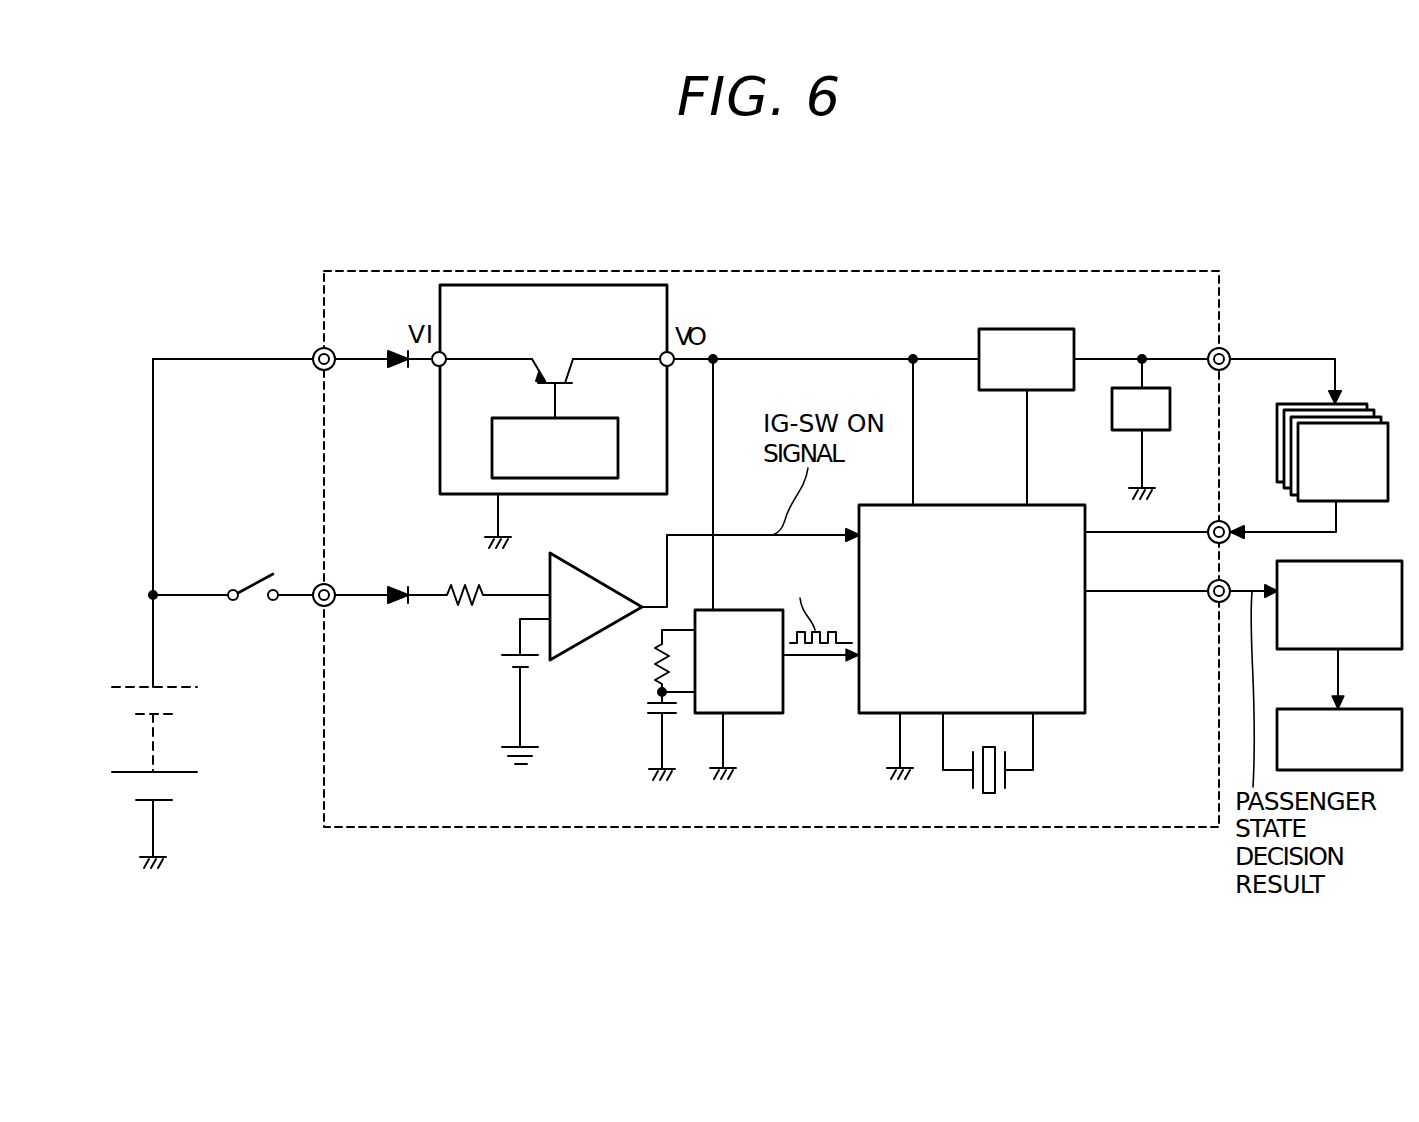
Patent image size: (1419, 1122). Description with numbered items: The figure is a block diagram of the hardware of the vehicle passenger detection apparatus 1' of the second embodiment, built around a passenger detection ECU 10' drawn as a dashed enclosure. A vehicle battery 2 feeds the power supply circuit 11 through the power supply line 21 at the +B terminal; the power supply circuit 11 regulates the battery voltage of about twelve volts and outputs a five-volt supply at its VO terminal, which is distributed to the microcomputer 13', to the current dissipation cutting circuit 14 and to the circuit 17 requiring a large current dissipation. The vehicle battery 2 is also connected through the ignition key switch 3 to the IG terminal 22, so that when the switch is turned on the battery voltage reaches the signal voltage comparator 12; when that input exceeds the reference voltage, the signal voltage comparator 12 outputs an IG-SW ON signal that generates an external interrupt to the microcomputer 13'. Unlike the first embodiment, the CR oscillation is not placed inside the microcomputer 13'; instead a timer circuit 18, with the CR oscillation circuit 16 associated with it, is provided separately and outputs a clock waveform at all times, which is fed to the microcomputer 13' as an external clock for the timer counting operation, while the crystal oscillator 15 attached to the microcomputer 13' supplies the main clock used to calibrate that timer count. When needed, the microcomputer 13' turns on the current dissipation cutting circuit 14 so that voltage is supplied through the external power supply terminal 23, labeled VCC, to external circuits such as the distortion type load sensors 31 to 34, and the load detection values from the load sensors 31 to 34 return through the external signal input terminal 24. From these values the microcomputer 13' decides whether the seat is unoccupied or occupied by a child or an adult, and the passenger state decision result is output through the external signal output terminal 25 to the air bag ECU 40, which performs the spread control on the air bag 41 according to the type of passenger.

The vehicle passenger detection apparatus 1' is at (771, 497).
The vehicle battery 2 is at (178, 775).
The ignition key switch 3 is at (262, 578).
The passenger detection ECU 10' is at (771, 521).
The power supply circuit 11 is at (439, 421).
The signal voltage comparator 12 is at (589, 572).
The microcomputer 13' is at (972, 609).
The current dissipation cutting circuit 14 is at (979, 340).
The crystal oscillator 15 is at (1005, 782).
The CR oscillation circuit 16 is at (648, 681).
The circuit requiring a large current dissipation 17 is at (1112, 415).
The timer circuit 18 is at (783, 690).
The power supply line 21 is at (368, 357).
The IG terminal 22 is at (318, 585).
The external power supply terminal 23 is at (1210, 352).
The external signal input terminal 24 is at (1210, 525).
The external signal output terminal 25 is at (1213, 601).
The distortion type load sensor 31 is at (1329, 449).
The distortion type load sensor 34 is at (1343, 462).
The air bag ECU 40 is at (1355, 561).
The air bag 41 is at (1355, 709).